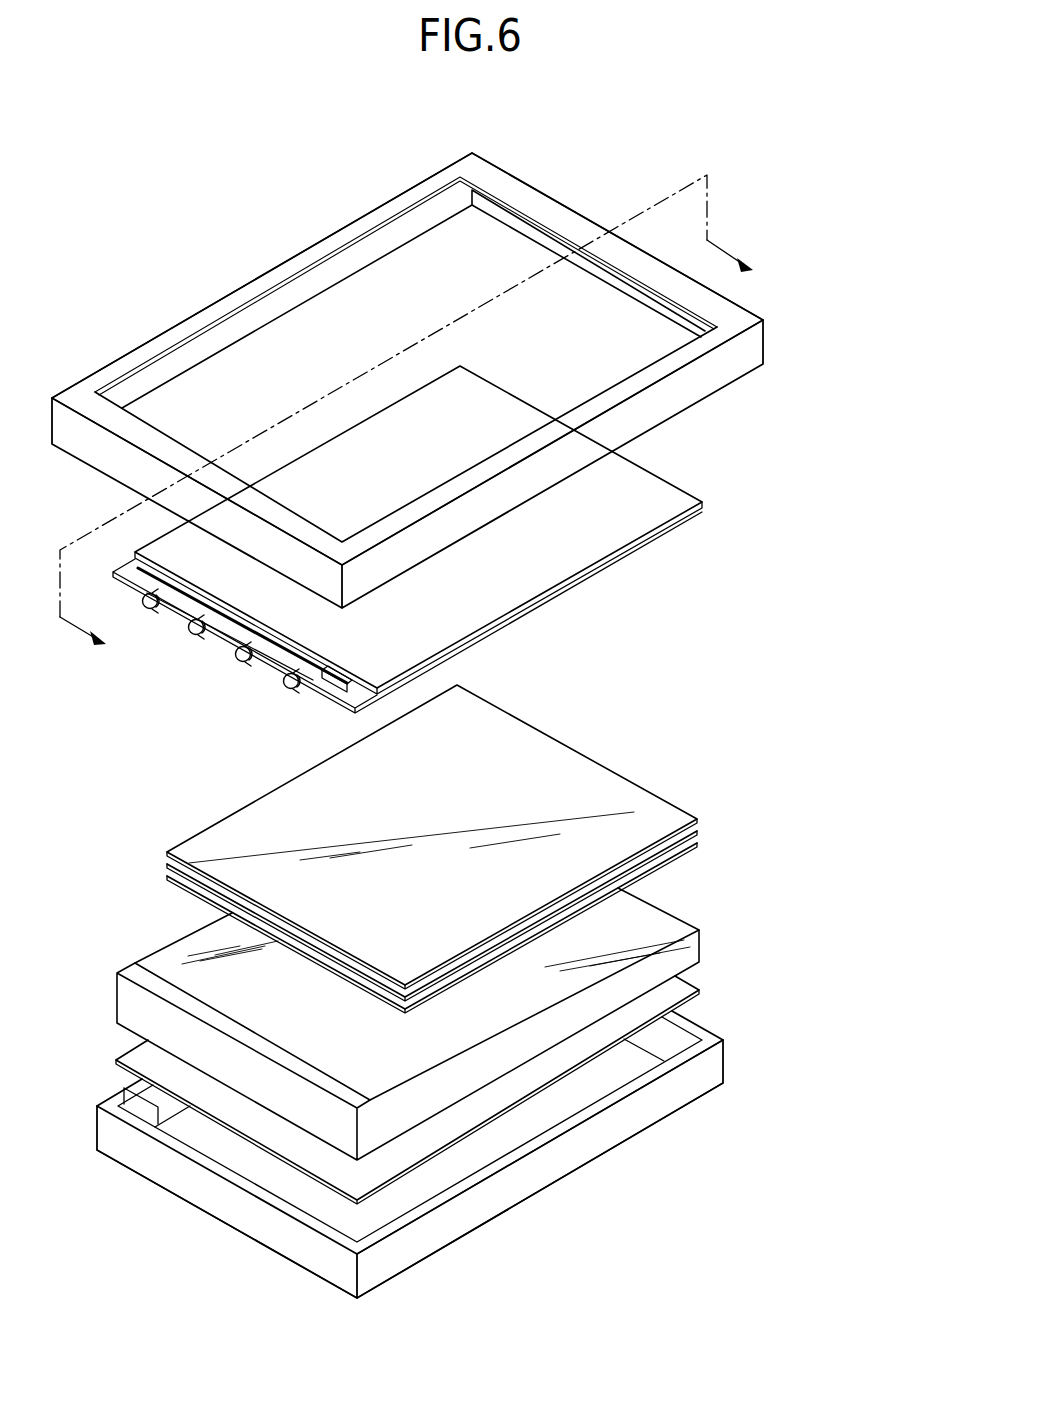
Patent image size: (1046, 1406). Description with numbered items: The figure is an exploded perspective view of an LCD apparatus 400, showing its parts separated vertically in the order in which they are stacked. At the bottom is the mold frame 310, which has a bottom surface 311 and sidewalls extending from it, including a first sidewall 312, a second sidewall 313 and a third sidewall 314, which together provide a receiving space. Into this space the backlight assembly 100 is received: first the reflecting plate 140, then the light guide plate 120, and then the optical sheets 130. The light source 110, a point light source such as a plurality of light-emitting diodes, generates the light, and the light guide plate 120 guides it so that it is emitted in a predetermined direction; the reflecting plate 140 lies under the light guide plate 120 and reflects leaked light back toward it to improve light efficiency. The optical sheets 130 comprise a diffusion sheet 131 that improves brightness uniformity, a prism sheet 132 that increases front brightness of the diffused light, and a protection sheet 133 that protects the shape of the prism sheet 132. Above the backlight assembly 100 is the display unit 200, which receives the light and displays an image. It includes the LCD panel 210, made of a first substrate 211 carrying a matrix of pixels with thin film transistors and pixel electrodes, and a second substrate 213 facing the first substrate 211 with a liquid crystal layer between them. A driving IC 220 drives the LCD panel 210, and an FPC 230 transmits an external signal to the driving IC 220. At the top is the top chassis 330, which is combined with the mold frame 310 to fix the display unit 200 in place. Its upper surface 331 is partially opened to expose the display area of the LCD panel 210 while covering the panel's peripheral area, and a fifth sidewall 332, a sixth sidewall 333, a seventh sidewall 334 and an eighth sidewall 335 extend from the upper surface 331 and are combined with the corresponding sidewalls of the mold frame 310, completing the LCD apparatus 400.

The LCD apparatus 400 is at (212, 148).
The top chassis 330 is at (550, 196).
The upper surface 331 is at (296, 518).
The fifth sidewall 332 is at (704, 376).
The sixth sidewall 333 is at (291, 297).
The seventh sidewall 334 is at (278, 546).
The eighth sidewall 335 is at (617, 283).
The LCD panel 210 is at (788, 484).
The second substrate 213 is at (704, 501).
The first substrate 211 is at (704, 512).
The display unit 200 is at (114, 554).
The driving IC 220 is at (344, 671).
The FPC 230 is at (318, 690).
The light source 110 is at (232, 662).
The backlight assembly 100 is at (850, 992).
The optical sheets 130 is at (787, 800).
The protection sheet 133 is at (692, 820).
The prism sheet 132 is at (697, 829).
The diffusion sheet 131 is at (697, 843).
The light guide plate 120 is at (703, 942).
The reflecting plate 140 is at (703, 992).
The mold frame 310 is at (694, 1102).
The bottom surface 311 is at (466, 1150).
The first sidewall 312 is at (577, 1148).
The second sidewall 313 is at (148, 1100).
The third sidewall 314 is at (252, 1214).